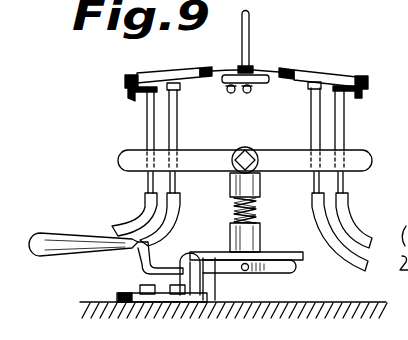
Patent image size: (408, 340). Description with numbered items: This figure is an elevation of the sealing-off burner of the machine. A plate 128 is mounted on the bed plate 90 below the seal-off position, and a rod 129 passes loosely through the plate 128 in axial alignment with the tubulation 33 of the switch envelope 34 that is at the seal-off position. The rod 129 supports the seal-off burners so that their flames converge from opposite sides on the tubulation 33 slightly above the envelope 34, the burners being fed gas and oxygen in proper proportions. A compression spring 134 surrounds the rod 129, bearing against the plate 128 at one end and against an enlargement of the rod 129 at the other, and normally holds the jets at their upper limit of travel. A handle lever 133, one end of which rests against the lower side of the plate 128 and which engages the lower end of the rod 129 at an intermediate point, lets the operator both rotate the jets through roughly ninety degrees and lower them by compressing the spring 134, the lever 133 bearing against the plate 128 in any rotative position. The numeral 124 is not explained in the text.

The tubulation 33 is at (250, 22).
The switch envelope 34 is at (268, 83).
The handle lever 133 is at (60, 241).
The rod 129 is at (234, 203).
The compression spring 134 is at (254, 203).
The plate 128 is at (224, 255).
The bed plate 90 is at (407, 262).
The member 124 is at (387, 17).